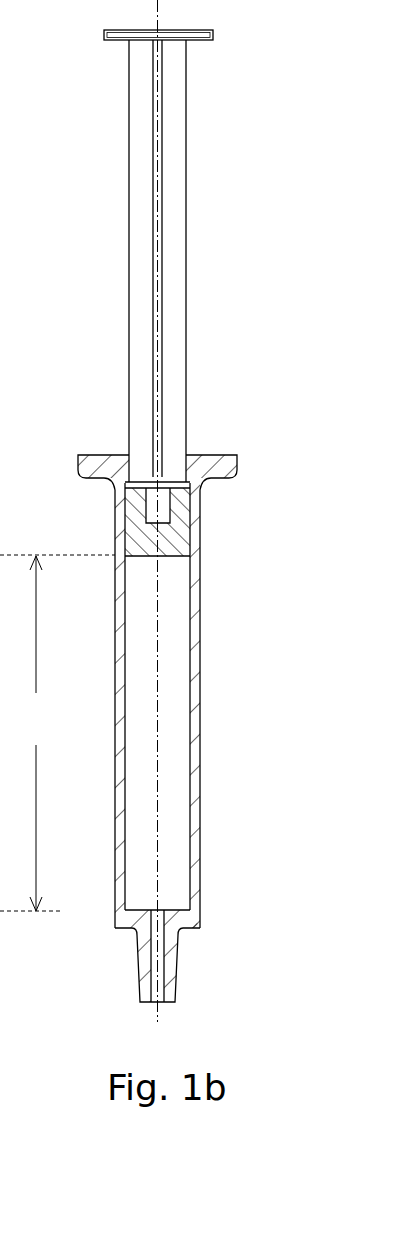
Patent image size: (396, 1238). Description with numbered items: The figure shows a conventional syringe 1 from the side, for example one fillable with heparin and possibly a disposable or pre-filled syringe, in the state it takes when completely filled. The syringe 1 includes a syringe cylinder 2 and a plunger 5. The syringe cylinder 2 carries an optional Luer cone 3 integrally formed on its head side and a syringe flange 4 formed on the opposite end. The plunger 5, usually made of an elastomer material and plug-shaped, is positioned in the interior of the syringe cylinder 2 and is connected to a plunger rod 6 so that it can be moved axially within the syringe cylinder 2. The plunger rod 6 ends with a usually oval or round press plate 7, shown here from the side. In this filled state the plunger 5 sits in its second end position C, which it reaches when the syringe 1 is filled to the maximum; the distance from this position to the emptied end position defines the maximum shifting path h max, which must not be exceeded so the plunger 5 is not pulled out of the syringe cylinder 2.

The syringe 1 is at (187, 511).
The syringe cylinder 2 is at (200, 697).
The Luer cone 3 is at (177, 965).
The syringe flange 4 is at (92, 455).
The plunger 5 is at (180, 535).
The plunger rod 6 is at (172, 215).
The press plate 7 is at (104, 40).
The second end position C is at (219, 516).